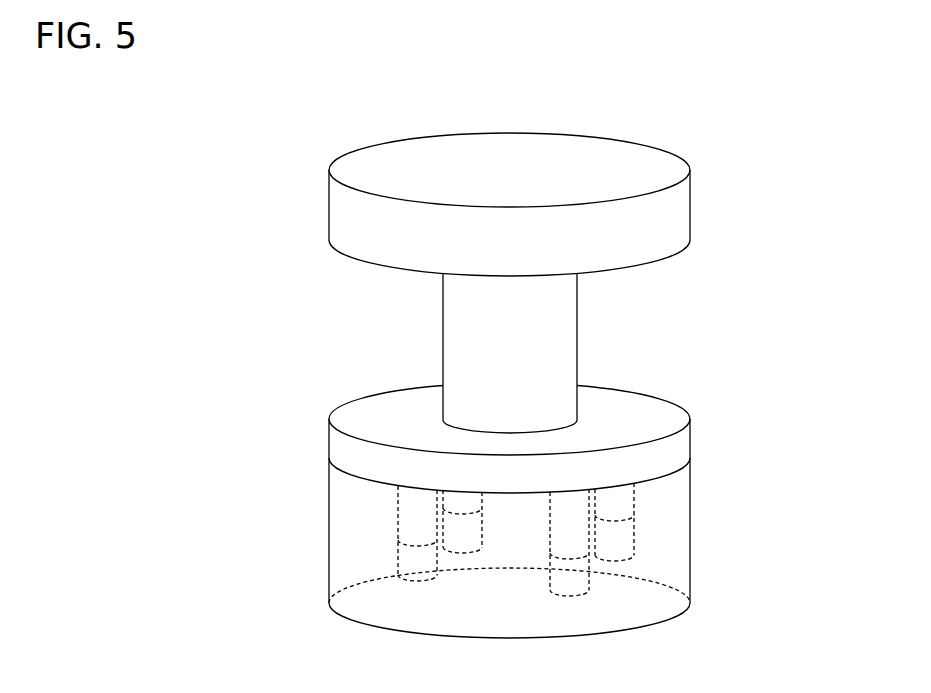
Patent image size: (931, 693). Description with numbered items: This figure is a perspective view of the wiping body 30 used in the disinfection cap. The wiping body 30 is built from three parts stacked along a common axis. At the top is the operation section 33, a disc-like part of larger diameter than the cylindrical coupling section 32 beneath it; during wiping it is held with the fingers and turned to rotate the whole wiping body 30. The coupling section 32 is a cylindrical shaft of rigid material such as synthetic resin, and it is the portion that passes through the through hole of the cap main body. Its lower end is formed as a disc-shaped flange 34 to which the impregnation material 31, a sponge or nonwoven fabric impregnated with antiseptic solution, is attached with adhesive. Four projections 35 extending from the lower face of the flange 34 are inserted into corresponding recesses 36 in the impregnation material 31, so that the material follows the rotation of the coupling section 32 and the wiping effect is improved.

The wiping body 30 is at (757, 152).
The impregnation material 31 is at (683, 537).
The coupling section 32 is at (578, 330).
The operation section 33 is at (675, 220).
The disc-shaped flange 34 is at (685, 440).
The projections 35 is at (626, 501).
The recesses 36 is at (627, 540).